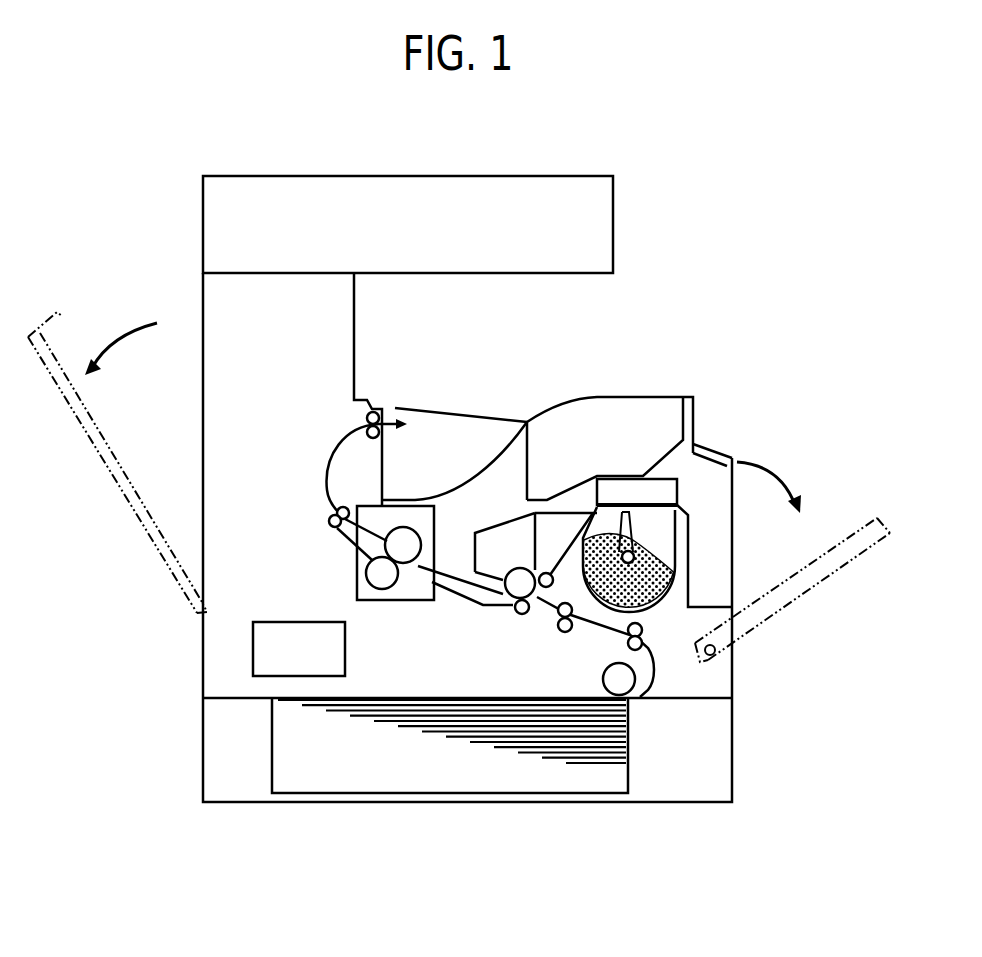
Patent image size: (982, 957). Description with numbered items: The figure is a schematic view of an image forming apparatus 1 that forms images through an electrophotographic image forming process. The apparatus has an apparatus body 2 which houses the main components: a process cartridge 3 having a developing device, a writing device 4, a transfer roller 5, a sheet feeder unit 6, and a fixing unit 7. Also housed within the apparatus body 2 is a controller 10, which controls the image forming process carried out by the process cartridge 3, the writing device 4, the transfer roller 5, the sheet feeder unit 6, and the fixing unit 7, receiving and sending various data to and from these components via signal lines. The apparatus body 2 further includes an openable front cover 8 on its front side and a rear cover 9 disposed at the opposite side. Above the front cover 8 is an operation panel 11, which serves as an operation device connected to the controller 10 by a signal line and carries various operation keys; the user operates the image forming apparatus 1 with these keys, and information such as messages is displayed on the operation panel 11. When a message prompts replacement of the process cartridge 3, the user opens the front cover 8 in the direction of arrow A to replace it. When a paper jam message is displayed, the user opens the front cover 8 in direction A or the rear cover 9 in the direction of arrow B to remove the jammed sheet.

The image forming apparatus 1 is at (729, 241).
The apparatus body 2 is at (208, 679).
The process cartridge 3 is at (689, 552).
The writing device 4 is at (556, 418).
The transfer roller 5 is at (522, 614).
The sheet feeder unit 6 is at (643, 712).
The fixing unit 7 is at (414, 509).
The front cover 8 is at (818, 580).
The rear cover 9 is at (123, 490).
The controller 10 is at (346, 649).
The operation panel 11 is at (713, 452).